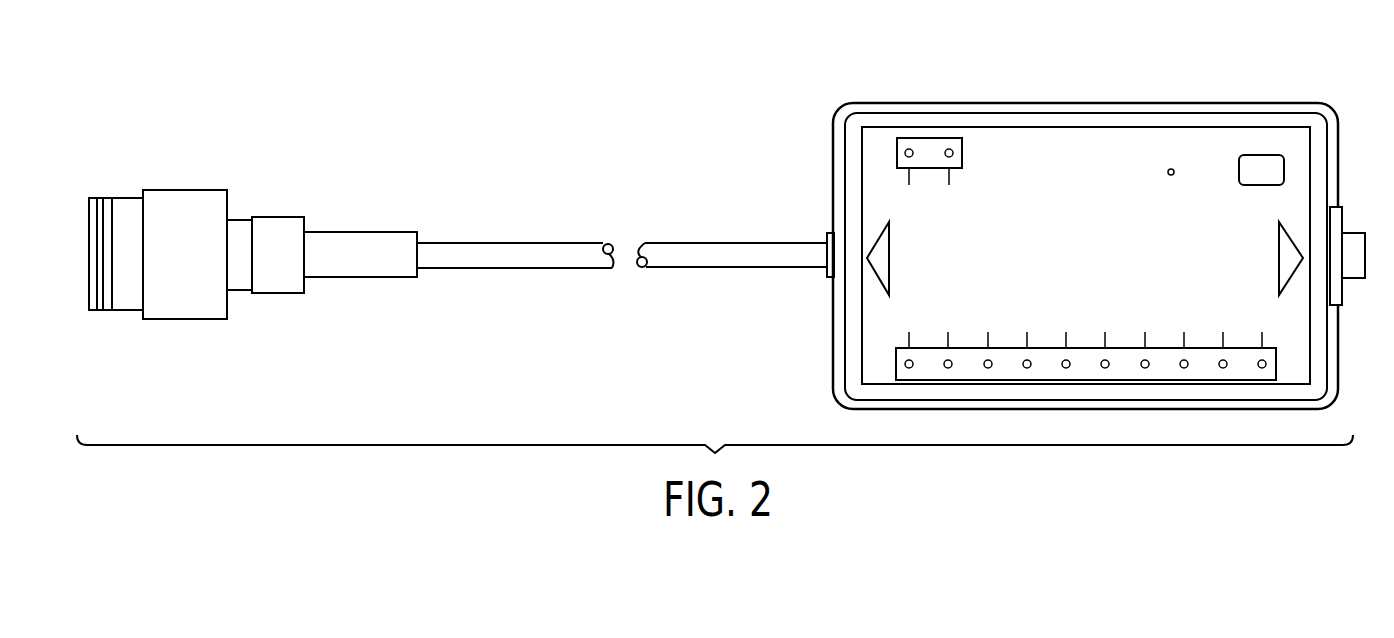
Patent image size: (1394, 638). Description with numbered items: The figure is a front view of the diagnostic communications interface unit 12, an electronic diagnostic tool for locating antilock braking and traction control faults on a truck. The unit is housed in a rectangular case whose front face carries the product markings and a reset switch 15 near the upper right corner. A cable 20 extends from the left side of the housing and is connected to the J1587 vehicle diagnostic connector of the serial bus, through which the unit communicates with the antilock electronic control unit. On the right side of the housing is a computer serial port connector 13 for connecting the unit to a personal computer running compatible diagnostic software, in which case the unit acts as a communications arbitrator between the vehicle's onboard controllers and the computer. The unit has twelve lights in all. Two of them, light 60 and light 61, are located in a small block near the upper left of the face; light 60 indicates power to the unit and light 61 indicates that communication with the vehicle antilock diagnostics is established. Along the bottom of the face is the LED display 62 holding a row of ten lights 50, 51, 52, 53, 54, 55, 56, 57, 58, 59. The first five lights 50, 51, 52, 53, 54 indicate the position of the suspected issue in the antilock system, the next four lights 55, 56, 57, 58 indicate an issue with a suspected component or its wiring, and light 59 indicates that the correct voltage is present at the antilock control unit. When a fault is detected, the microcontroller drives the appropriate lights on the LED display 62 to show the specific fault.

The diagnostic communications interface unit 12 is at (1171, 103).
The computer serial port connector 13 is at (1362, 278).
The reset switch 15 is at (1264, 155).
The cable 20 is at (527, 243).
The light 50 is at (910, 361).
The light 51 is at (949, 361).
The light 52 is at (989, 361).
The light 53 is at (1028, 361).
The light 54 is at (1067, 361).
The light 55 is at (1106, 361).
The light 56 is at (1146, 361).
The light 57 is at (1185, 361).
The light 58 is at (1224, 361).
The light 59 is at (1263, 361).
The light 60 is at (911, 150).
The light 61 is at (951, 150).
The LED display 62 is at (897, 348).